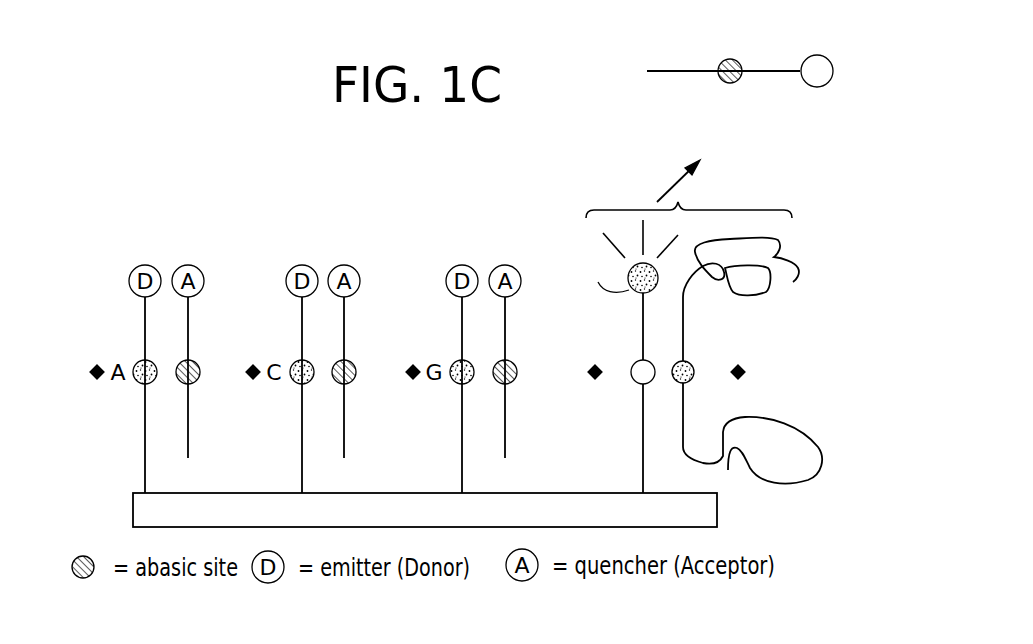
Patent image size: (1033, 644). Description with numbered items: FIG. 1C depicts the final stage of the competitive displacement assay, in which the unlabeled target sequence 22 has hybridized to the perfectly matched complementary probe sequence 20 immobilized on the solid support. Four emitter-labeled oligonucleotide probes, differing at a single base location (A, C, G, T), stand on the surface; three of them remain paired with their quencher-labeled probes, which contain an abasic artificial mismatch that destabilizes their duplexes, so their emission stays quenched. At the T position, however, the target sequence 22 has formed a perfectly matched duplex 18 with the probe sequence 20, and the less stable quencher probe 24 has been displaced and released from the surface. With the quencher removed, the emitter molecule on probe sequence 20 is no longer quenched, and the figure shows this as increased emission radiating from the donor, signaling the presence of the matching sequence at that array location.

The perfectly matched duplex 18 is at (680, 201).
The perfectly matched complementary probe sequence 20 is at (643, 318).
The unlabeled target sequence 22 is at (683, 343).
The quencher probe 24 is at (771, 67).